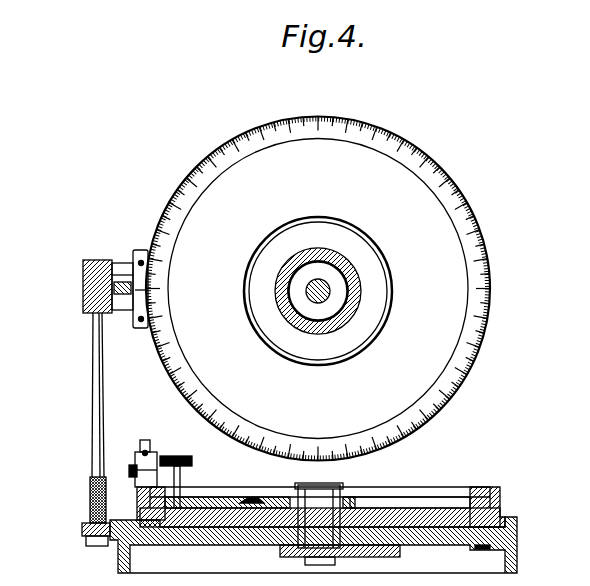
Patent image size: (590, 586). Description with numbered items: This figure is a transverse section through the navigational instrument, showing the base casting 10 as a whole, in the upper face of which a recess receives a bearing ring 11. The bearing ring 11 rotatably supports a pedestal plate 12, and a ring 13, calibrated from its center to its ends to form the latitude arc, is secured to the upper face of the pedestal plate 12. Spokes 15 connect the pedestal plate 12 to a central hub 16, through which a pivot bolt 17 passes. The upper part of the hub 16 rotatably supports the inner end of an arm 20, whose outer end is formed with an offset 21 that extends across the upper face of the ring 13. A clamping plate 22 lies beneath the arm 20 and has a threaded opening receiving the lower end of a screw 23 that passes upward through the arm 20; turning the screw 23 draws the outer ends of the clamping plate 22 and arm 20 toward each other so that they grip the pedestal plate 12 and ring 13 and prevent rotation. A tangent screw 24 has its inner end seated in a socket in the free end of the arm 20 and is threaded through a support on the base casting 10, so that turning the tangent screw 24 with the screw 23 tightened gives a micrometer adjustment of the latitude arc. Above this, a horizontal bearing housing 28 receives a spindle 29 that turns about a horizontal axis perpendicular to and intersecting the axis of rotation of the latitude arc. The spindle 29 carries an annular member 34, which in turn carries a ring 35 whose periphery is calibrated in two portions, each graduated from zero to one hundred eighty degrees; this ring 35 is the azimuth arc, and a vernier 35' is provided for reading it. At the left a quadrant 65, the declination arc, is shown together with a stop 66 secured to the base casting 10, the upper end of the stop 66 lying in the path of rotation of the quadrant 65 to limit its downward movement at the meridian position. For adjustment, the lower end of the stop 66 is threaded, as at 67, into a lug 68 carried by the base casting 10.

The base casting 10 is at (136, 560).
The bearing ring 11 is at (482, 540).
The pedestal plate 12 is at (503, 500).
The ring 13 is at (137, 491).
The spokes 15 is at (424, 512).
The hub 16 is at (355, 493).
The pivot bolt 17 is at (340, 524).
The arm 20 is at (250, 498).
The offset 21 is at (129, 472).
The clamping plate 22 is at (212, 500).
The screw 23 is at (177, 456).
The tangent screw 24 is at (140, 452).
The bearing housing 28 is at (327, 249).
The spindle 29 is at (311, 297).
The annular member 34 is at (318, 289).
The ring 35 is at (329, 289).
The vernier 35' is at (131, 274).
The quadrant 65 is at (83, 287).
The stop 66 is at (92, 394).
The threaded lower end 67 is at (96, 547).
The lug 68 is at (82, 529).